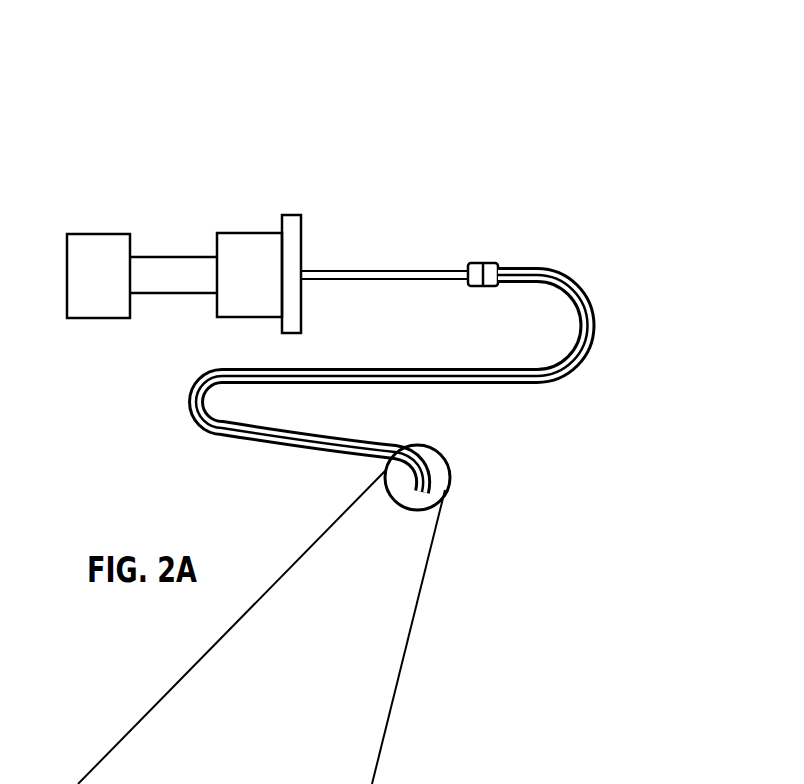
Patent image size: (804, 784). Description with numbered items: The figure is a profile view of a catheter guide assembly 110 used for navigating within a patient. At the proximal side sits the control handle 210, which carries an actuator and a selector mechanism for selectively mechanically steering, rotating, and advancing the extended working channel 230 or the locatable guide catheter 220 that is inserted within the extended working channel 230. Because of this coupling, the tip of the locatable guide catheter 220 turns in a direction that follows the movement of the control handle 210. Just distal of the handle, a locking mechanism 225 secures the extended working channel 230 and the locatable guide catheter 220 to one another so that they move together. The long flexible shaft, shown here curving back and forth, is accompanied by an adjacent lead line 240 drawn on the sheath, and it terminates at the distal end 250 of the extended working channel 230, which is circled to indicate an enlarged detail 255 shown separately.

The catheter guide assembly 110 is at (357, 85).
The control handle 210 is at (193, 200).
The locatable guide catheter 220 is at (363, 270).
The locking mechanism 225 is at (483, 266).
The extended working channel 230 is at (578, 315).
The outer sheath 240 is at (583, 355).
The distal end 250 is at (444, 490).
The enlarged detail view 255 is at (240, 783).